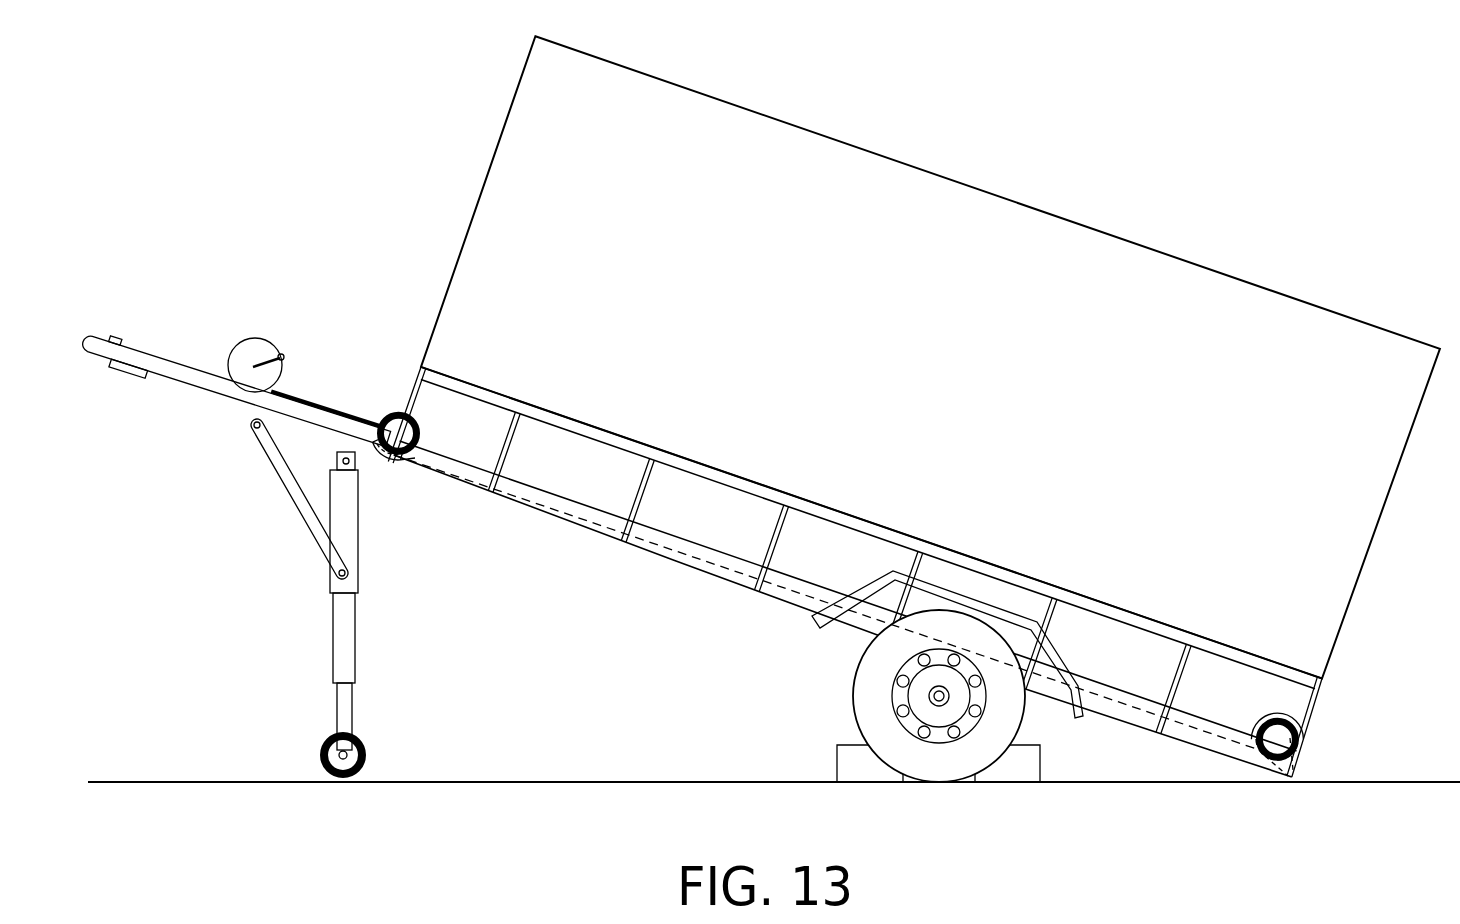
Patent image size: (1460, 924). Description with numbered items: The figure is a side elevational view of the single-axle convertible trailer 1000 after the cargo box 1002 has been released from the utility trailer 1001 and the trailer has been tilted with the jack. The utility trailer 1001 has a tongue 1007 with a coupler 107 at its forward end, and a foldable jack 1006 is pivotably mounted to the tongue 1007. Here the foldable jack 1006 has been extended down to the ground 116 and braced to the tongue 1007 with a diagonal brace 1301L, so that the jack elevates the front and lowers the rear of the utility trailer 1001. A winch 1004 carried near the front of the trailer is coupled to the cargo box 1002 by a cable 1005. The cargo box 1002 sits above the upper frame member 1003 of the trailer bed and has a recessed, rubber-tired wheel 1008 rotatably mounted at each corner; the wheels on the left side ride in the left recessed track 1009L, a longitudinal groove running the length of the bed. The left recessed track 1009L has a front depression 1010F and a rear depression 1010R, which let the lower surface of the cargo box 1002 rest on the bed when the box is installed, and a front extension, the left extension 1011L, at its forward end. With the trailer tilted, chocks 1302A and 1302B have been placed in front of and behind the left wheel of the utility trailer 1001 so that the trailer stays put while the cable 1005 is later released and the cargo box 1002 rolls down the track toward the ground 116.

The convertible trailer 1000 is at (380, 193).
The utility trailer 1001 is at (663, 550).
The cargo box 1002 is at (880, 205).
The upper frame rail 1003 is at (469, 384).
The winch 1004 is at (245, 353).
The cable 1005 is at (300, 397).
The foldable jack 1006 is at (343, 583).
The tongue 1007 is at (197, 387).
The rubber-tired wheel 1008 is at (390, 417).
The left recessed track 1009L is at (792, 600).
The front depression 1010F is at (399, 477).
The rear depression 1010R is at (1262, 771).
The left extension 1011L is at (372, 463).
The coupler 107 is at (93, 335).
The ground 116 is at (638, 778).
The diagonal brace 1301L is at (297, 500).
The chock 1302A is at (848, 760).
The chock 1302B is at (1028, 762).